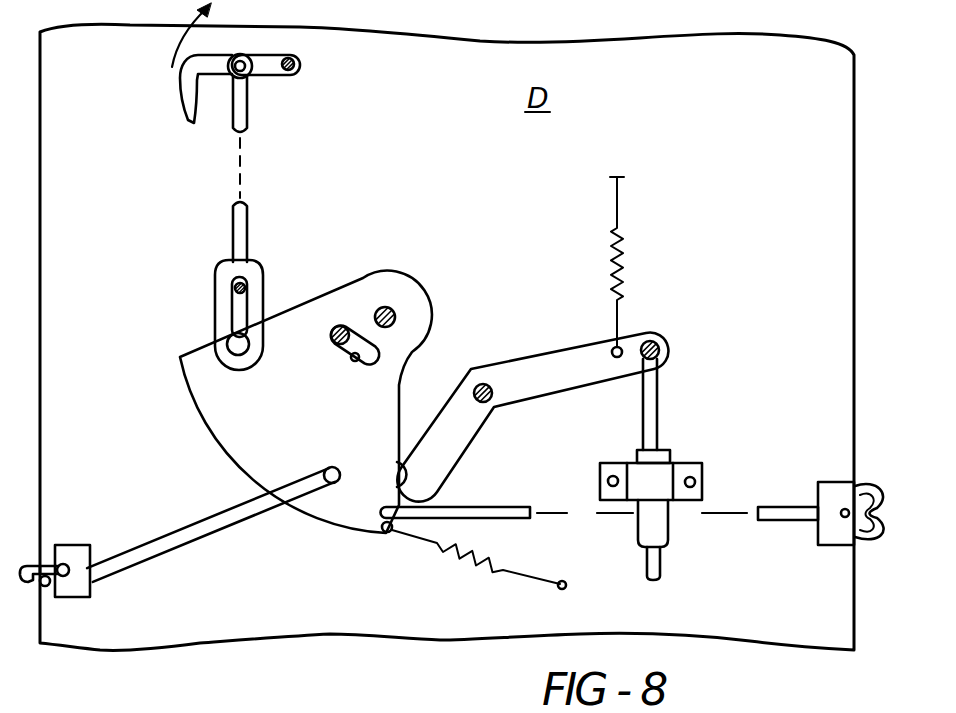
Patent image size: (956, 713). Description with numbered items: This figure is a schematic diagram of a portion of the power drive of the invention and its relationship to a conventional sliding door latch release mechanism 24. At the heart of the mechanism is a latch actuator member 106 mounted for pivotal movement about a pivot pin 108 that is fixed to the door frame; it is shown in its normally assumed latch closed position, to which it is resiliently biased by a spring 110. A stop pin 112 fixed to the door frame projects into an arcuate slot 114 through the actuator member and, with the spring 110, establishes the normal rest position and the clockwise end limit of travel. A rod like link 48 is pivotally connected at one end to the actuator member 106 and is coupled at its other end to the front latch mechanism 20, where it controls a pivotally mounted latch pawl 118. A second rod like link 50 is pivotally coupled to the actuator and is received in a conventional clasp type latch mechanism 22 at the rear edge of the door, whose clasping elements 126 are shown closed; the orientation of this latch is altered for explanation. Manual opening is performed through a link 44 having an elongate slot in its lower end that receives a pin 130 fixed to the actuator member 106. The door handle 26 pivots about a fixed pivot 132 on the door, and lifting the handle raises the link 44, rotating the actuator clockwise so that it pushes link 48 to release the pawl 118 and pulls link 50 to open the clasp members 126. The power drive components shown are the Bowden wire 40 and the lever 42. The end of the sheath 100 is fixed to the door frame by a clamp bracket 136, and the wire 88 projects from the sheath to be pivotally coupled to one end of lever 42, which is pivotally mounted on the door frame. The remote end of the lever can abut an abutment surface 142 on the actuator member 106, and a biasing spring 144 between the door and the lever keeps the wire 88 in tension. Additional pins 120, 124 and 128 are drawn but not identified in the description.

The front latch mechanism 20 is at (82, 541).
The clasp type latch mechanism 22 is at (822, 545).
The latch release mechanism 24 is at (383, 212).
The door handle 26 is at (183, 90).
The Bowden wire 40 is at (631, 534).
The lever 42 is at (543, 360).
The link 44 is at (233, 234).
The rod like link 48 is at (210, 538).
The second rod like link 50 is at (523, 467).
The wire 88 is at (658, 408).
The sheath 100 is at (668, 532).
The latch actuator member 106 is at (298, 457).
The pivot pin 108 is at (392, 308).
The spring 110 is at (445, 558).
The stop pin 112 is at (330, 338).
The arcuate slot 114 is at (353, 361).
The latch pawl 118 is at (27, 558).
The pivot pin 120 is at (92, 550).
The pin 124 is at (45, 586).
The clasping elements 126 is at (870, 480).
The pin 128 is at (243, 290).
The pin 130 is at (222, 342).
The fixed pivot 132 is at (295, 66).
The clamp bracket 136 is at (483, 385).
The abutment surface 142 is at (400, 465).
The biasing spring 144 is at (620, 258).